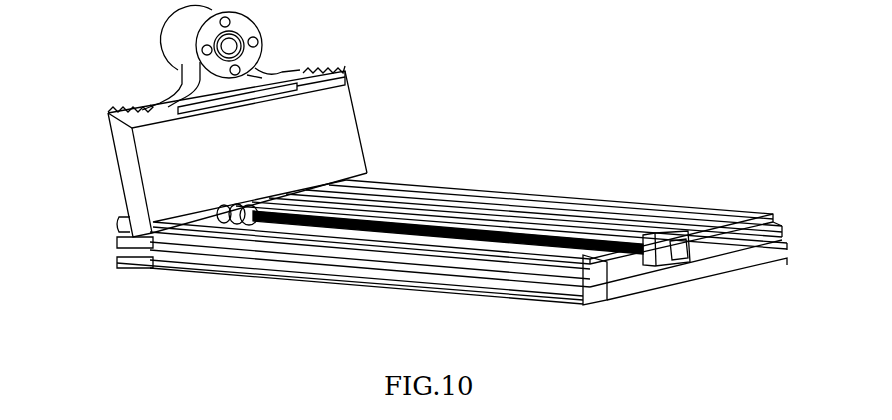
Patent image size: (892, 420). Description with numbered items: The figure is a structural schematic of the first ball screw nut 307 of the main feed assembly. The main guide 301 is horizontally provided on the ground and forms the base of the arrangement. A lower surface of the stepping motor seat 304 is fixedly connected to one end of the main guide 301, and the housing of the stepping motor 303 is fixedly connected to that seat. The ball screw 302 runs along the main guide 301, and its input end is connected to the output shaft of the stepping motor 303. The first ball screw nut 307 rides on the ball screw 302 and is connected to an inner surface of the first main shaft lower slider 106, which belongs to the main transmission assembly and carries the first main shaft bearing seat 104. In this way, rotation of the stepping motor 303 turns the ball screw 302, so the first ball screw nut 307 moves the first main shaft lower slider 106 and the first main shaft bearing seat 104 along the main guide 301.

The first main shaft bearing seat 104 is at (168, 97).
The first main shaft lower slider 106 is at (127, 163).
The main guide 301 is at (147, 255).
The ball screw 302 is at (423, 229).
The stepping motor 303 is at (685, 255).
The stepping motor seat 304 is at (682, 233).
The first ball screw nut 307 is at (255, 218).